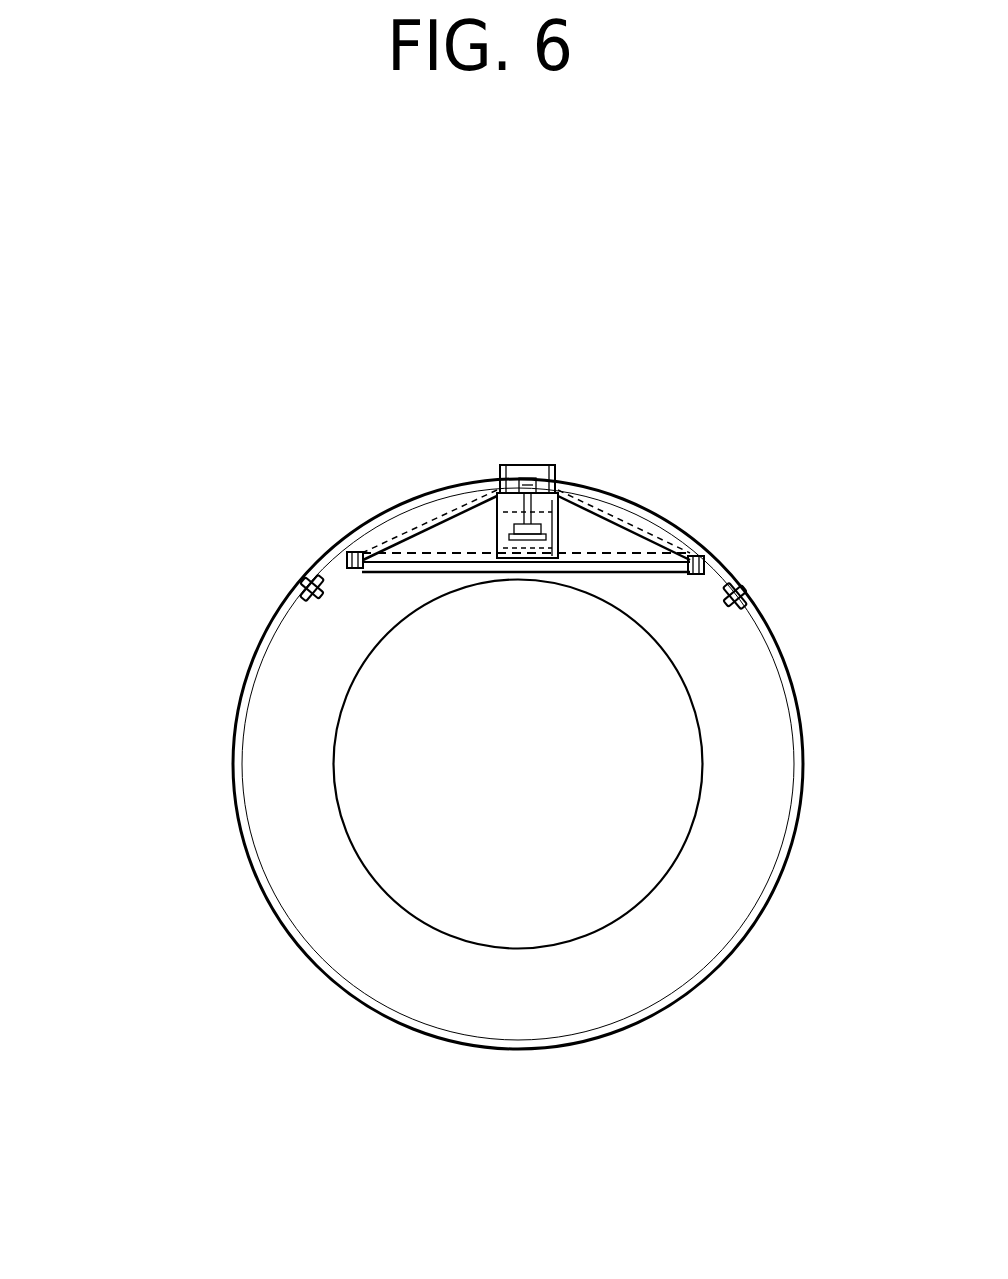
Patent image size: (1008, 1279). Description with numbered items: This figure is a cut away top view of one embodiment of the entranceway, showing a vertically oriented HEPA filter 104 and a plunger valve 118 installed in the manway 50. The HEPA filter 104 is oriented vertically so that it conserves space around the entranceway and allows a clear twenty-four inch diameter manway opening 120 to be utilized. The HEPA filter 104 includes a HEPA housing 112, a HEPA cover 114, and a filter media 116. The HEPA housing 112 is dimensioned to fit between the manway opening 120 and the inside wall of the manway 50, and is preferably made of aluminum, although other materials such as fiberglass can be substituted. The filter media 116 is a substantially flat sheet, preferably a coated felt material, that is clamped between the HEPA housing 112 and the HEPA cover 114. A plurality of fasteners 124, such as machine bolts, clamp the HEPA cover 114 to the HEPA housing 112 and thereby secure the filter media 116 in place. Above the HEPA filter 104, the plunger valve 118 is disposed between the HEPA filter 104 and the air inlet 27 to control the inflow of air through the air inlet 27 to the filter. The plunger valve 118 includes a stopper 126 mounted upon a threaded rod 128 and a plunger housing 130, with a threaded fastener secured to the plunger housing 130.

The manway 50 is at (712, 955).
The HEPA cover 114 is at (402, 570).
The manway opening 120 is at (690, 822).
The threaded rod 128 is at (595, 563).
The HEPA filter 104 is at (355, 493).
The HEPA housing 112 is at (650, 505).
The filter media 116 is at (688, 520).
The plunger valve 118 is at (487, 473).
The stopper 126 is at (510, 478).
The air inlet 27 is at (548, 468).
The plunger housing 130 is at (558, 478).
The fasteners 124 is at (748, 592).